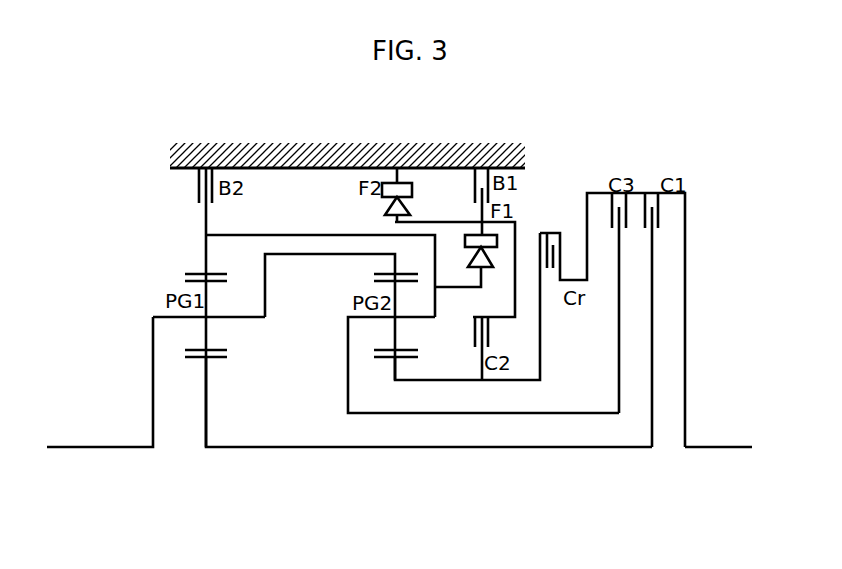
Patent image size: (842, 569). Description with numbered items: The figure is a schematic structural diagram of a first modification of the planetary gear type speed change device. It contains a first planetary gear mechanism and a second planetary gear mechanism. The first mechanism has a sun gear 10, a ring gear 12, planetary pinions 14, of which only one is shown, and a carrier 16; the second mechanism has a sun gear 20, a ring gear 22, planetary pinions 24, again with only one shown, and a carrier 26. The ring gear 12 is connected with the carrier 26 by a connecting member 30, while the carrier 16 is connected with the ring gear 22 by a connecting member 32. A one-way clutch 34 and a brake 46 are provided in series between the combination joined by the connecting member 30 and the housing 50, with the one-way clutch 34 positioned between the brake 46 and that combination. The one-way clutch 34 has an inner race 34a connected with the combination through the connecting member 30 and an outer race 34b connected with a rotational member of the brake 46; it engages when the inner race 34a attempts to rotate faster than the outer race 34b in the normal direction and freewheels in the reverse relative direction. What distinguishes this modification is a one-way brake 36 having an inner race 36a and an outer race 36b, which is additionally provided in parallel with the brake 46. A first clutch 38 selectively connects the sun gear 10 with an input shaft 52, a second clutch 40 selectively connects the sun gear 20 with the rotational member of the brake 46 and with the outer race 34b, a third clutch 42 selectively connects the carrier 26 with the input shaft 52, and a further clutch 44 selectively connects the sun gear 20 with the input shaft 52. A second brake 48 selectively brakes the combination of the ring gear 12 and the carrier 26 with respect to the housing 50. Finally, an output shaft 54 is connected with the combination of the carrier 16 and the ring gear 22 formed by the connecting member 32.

The sun gear 10 is at (205, 357).
The ring gear 12 is at (198, 273).
The planetary pinions 14 is at (228, 350).
The carrier 16 is at (244, 316).
The sun gear 20 is at (393, 359).
The ring gear 22 is at (378, 279).
The planetary pinions 24 is at (420, 350).
The carrier 26 is at (370, 318).
The connecting member 30 is at (313, 233).
The connecting member 32 is at (309, 256).
The one-way clutch 34 is at (470, 261).
The inner race 34a is at (487, 281).
The outer race 34b is at (498, 240).
The one-way brake 36 is at (384, 202).
The inner race 36a is at (412, 210).
The outer race 36b is at (414, 190).
The clutch 38 is at (660, 212).
The clutch 40 is at (490, 332).
The clutch 42 is at (621, 230).
The clutch 44 is at (555, 251).
The brake 46 is at (490, 190).
The brake 48 is at (198, 184).
The housing 50 is at (527, 158).
The input shaft 52 is at (725, 446).
The output shaft 54 is at (82, 446).